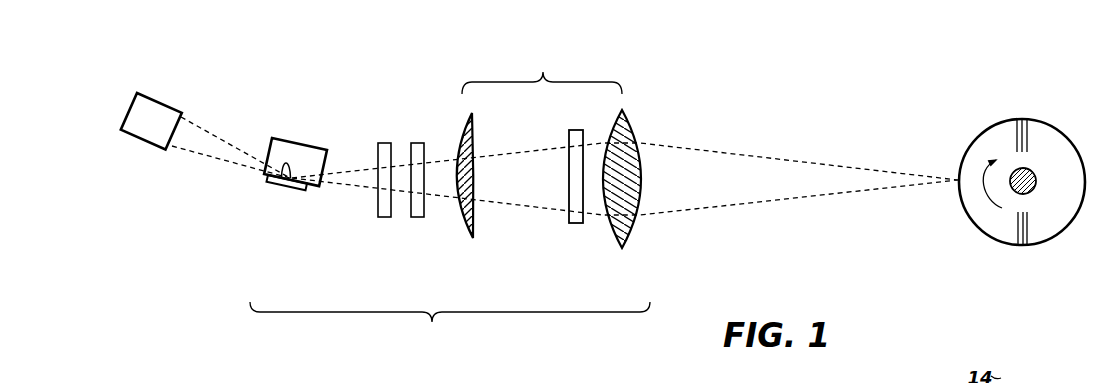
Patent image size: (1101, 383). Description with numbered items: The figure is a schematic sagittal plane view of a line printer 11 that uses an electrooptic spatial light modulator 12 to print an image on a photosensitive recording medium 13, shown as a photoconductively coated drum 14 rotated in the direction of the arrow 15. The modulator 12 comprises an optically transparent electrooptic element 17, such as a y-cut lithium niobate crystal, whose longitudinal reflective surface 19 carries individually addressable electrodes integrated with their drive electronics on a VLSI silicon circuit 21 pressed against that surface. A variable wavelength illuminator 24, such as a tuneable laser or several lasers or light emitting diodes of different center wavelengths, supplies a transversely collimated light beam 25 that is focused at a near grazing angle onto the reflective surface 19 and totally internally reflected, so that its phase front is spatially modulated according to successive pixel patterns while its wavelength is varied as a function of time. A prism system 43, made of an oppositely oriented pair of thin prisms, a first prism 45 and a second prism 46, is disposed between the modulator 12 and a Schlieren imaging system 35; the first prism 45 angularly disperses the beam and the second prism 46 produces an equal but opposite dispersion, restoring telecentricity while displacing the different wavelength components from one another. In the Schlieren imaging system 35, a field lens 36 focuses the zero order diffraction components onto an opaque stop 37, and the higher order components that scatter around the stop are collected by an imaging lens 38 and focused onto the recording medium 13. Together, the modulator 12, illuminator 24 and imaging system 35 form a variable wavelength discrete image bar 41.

The line printer 11 is at (718, 142).
The electrooptic spatial light modulator 12 is at (305, 130).
The photosensitive recording medium 13 is at (970, 146).
The photoconductively coated drum 14 is at (972, 223).
The arrow 15 is at (983, 187).
The electrooptic element 17 is at (272, 138).
The reflective surface 19 is at (283, 172).
The VLSI silicon circuit 21 is at (273, 187).
The variable wavelength illuminator 24 is at (130, 109).
The light beam 25 is at (205, 143).
The Schlieren imaging system 35 is at (562, 161).
The field lens 36 is at (462, 217).
The opaque stop 37 is at (577, 225).
The imaging lens 38 is at (633, 217).
The variable wavelength discrete image bar 41 is at (454, 195).
The prism system 43 is at (415, 228).
The first prism 45 is at (377, 198).
The second prism 46 is at (418, 142).